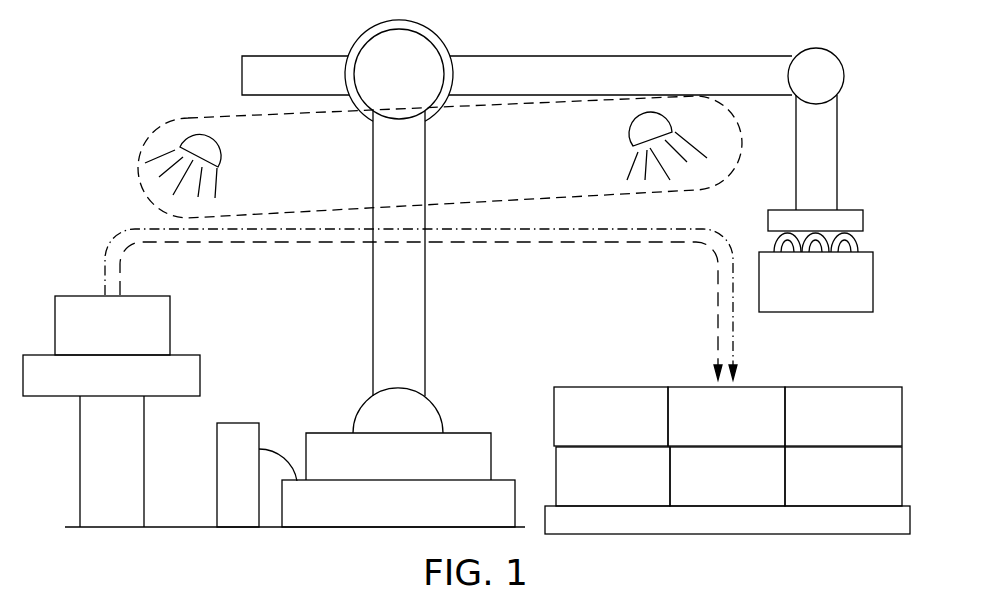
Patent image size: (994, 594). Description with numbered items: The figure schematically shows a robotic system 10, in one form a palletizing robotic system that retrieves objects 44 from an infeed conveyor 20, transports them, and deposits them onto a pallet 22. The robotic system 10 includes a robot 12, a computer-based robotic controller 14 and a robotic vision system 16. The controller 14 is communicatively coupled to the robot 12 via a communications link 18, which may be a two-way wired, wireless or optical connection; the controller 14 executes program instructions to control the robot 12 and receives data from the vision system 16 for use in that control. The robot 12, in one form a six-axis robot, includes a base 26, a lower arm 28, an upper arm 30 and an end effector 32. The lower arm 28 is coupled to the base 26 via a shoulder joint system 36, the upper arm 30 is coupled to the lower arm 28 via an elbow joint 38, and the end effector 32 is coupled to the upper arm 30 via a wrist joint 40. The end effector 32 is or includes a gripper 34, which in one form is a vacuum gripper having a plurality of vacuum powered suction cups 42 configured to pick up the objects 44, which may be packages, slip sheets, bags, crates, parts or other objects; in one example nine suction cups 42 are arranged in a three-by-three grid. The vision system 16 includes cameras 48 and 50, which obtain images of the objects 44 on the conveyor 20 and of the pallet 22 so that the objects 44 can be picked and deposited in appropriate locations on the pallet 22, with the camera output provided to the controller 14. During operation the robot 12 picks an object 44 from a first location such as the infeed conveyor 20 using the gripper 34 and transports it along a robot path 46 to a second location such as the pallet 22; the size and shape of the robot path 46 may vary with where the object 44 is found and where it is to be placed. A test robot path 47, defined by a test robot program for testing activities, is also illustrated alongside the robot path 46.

The robotic system 10 is at (122, 44).
The robot 12 is at (480, 36).
The computer-based robotic controller 14 is at (253, 487).
The robotic vision system 16 is at (156, 132).
The communications link 18 is at (279, 450).
The infeed conveyor 20 is at (126, 391).
The pallet 22 is at (545, 505).
The base 26 is at (413, 517).
The lower arm 28 is at (413, 291).
The upper arm 30 is at (622, 89).
The end effector 32 is at (858, 190).
The gripper 34 is at (878, 231).
The shoulder joint system 36 is at (413, 426).
The elbow joint 38 is at (413, 89).
The wrist joint 40 is at (831, 89).
The suction cups 42 is at (775, 249).
The objects 44 is at (126, 341).
The robot path 46 is at (138, 228).
The test robot path 47 is at (190, 244).
The camera 48 is at (213, 154).
The camera 50 is at (663, 136).